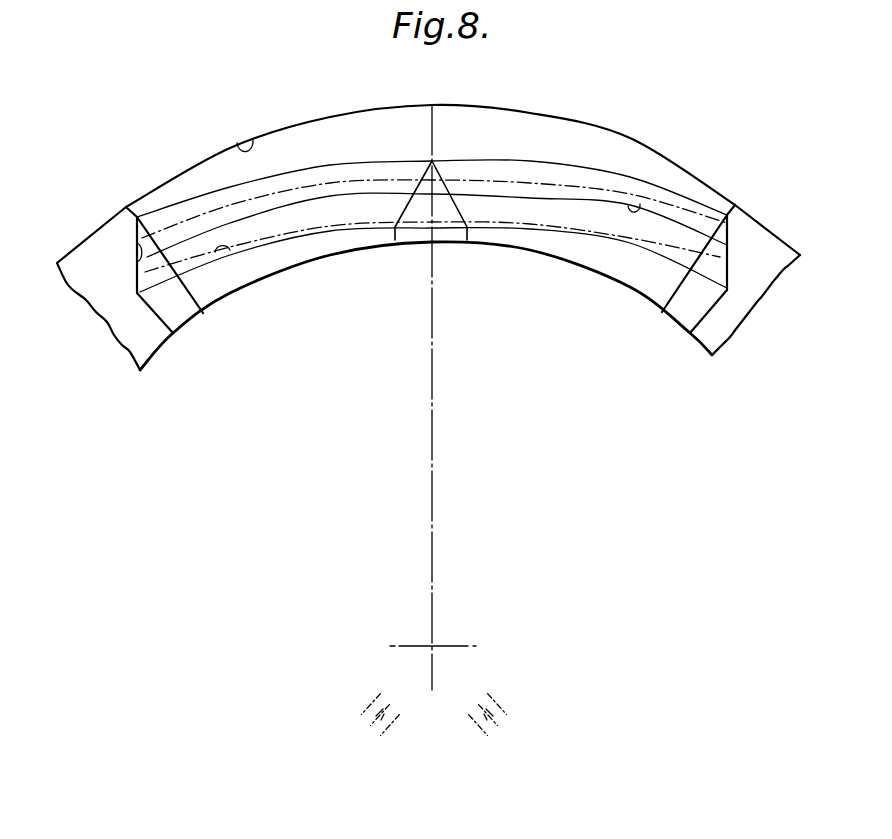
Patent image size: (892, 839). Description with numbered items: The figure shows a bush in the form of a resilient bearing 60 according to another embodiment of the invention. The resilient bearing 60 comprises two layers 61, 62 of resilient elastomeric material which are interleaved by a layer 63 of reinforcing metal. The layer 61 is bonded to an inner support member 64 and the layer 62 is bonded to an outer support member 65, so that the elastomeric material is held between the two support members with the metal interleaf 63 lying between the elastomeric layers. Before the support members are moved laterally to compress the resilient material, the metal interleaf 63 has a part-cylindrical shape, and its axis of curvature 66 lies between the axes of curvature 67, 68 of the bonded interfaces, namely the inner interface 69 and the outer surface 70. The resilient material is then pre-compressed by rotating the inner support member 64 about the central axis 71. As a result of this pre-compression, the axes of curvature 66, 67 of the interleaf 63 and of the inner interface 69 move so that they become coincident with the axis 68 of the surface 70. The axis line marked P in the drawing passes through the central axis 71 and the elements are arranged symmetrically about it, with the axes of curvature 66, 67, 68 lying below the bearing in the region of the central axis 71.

The resilient bearing 60 is at (551, 113).
The layer of resilient elastomeric material 61 is at (667, 236).
The layer of resilient elastomeric material 62 is at (613, 183).
The layer of reinforcing metal 63 is at (141, 258).
The inner support member 64 is at (614, 270).
The outer support member 65 is at (415, 142).
The axis of curvature 66 is at (380, 712).
The axis of curvature 67 is at (382, 717).
The axis of curvature 68 is at (400, 728).
The inner interface 69 is at (228, 248).
The surface 70 is at (240, 144).
The central axis 71 is at (434, 646).
The axis P is at (433, 487).